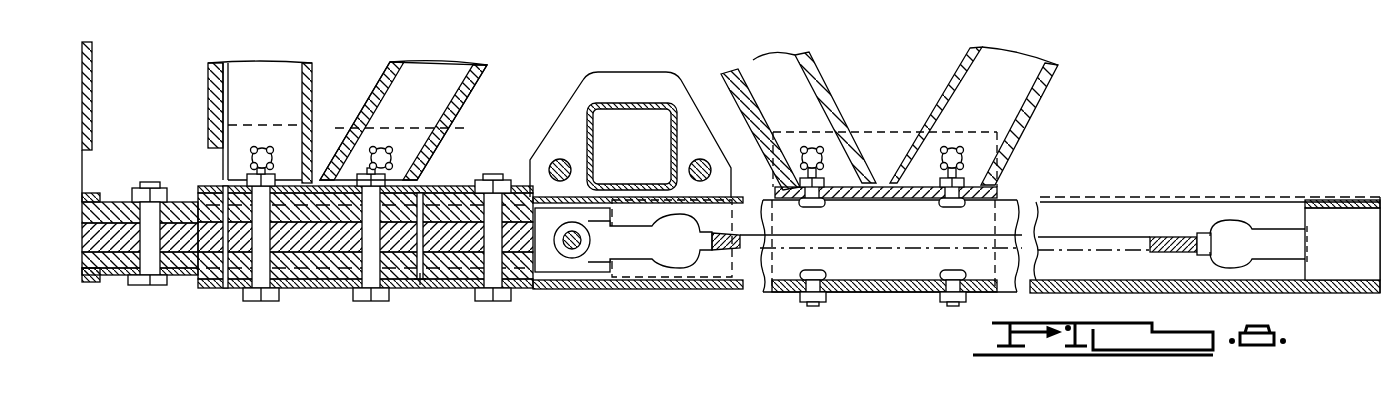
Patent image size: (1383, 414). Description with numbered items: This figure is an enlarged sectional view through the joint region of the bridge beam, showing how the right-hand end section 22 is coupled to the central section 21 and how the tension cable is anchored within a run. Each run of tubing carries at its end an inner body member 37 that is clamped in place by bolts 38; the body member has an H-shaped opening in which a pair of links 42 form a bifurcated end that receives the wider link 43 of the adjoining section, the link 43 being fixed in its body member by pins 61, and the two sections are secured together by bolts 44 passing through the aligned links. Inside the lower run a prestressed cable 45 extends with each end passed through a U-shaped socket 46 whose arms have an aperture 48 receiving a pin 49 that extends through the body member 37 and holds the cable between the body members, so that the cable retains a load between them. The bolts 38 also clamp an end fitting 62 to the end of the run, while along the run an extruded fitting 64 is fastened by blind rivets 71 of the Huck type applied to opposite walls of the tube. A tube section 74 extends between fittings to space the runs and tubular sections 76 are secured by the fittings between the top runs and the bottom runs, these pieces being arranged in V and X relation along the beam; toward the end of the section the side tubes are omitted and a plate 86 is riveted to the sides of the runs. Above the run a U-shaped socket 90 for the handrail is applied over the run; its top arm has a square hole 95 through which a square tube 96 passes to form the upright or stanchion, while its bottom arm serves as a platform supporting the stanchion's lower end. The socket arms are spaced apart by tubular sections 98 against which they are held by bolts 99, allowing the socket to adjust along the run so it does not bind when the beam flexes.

The central section 21 is at (90, 287).
The right-hand end section 22 is at (608, 292).
The inner body member 37 is at (425, 300).
The bolts 38 is at (263, 303).
The links 42 is at (110, 203).
The link 43 is at (195, 273).
The bolts 44 is at (158, 272).
The cable 45 is at (787, 247).
The U-shaped socket 46 is at (652, 247).
The aperture 48 is at (1318, 274).
The pin 49 is at (566, 250).
The pins 61 is at (225, 210).
The end fitting 62 is at (447, 162).
The fitting 64 is at (1012, 185).
The blind rivets 71 is at (937, 155).
The tube section 74 is at (676, 393).
The tubular sections 76 is at (948, 80).
The plate 86 is at (1222, 294).
The U-shaped socket 90 is at (608, 83).
The square hole 95 is at (632, 108).
The square tube 96 is at (677, 110).
The tubular sections 98 is at (687, 170).
The bolts 99 is at (690, 157).